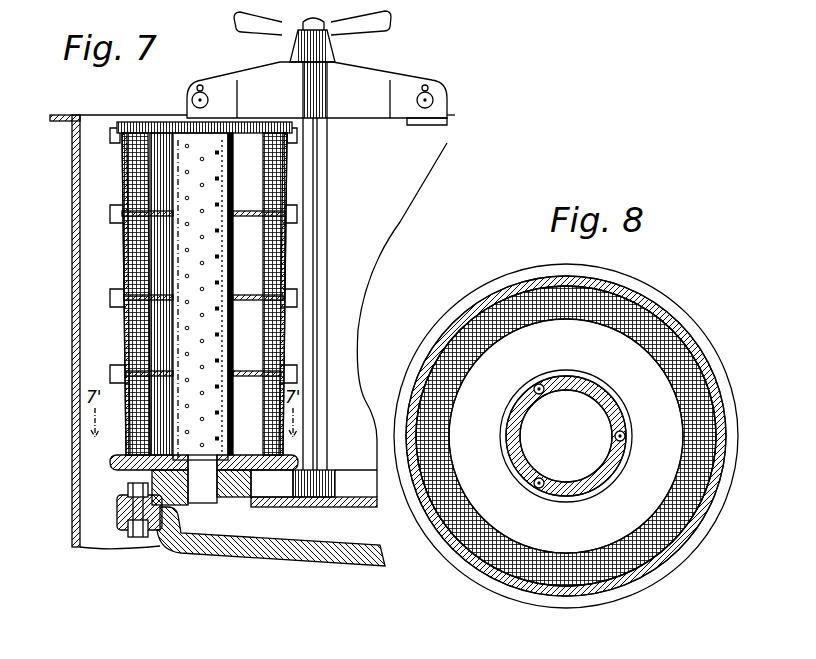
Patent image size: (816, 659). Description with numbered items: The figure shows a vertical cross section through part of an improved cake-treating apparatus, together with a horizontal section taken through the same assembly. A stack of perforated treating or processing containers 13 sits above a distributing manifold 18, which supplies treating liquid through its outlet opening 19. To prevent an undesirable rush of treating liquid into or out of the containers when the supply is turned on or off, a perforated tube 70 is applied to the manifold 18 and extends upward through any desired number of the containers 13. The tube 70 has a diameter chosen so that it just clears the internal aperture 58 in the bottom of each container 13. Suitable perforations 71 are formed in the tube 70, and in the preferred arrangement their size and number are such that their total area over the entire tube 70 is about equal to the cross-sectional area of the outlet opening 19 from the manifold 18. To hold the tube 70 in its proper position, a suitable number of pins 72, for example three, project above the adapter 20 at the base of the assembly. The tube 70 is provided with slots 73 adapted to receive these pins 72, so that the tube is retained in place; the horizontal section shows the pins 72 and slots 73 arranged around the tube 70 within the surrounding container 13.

In FIG. 7, the perforated treating container 13 is at (123, 180).
In FIG. 8, the perforated treating container 13 is at (493, 566).
In FIG. 7, the distributing manifold 18 is at (271, 536).
In FIG. 7, the outlet opening 19 is at (163, 542).
In FIG. 7, the adapter 20 is at (112, 460).
In FIG. 7, the internal aperture 58 is at (173, 220).
In FIG. 7, the perforated tube 70 is at (233, 173).
In FIG. 7, the perforations 71 is at (200, 200).
In FIG. 7, the pins 72 is at (200, 487).
In FIG. 8, the pins 72 is at (530, 412).
In FIG. 7, the slots 73 is at (238, 472).
In FIG. 8, the slots 73 is at (614, 437).